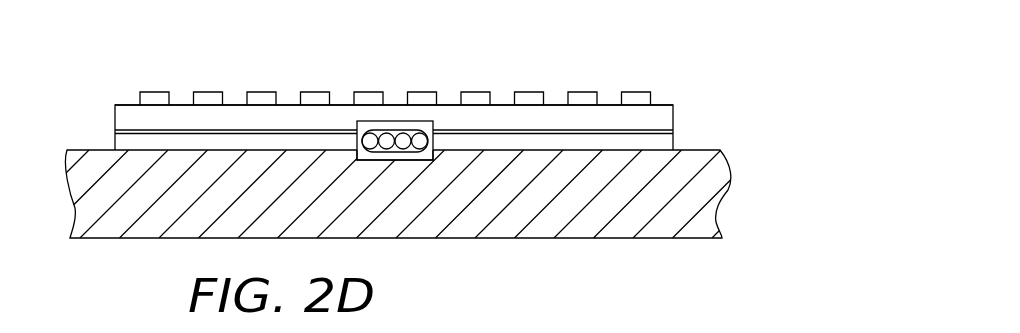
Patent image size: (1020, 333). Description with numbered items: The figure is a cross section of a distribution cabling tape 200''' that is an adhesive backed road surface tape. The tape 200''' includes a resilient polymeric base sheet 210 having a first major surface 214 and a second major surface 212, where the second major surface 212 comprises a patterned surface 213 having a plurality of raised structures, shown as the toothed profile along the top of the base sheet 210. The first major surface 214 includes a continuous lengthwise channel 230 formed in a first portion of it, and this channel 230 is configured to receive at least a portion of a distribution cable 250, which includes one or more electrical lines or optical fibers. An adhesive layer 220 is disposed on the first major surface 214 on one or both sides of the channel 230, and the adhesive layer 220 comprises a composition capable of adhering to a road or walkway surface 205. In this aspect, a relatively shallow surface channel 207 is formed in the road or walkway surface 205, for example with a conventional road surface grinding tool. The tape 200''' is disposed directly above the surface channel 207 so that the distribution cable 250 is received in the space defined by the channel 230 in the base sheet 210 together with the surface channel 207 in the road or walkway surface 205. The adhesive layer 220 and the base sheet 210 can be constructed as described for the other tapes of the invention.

The distribution cabling tape 200''' is at (718, 33).
The road or walkway surface 205 is at (693, 182).
The surface channel 207 is at (423, 156).
The resilient polymeric base sheet 210 is at (123, 115).
The second major surface 212 is at (663, 105).
The patterned surface 213 is at (582, 92).
The first major surface 214 is at (612, 132).
The adhesive layer 220 is at (667, 138).
The channel 230 is at (365, 128).
The distribution cable 250 is at (408, 131).